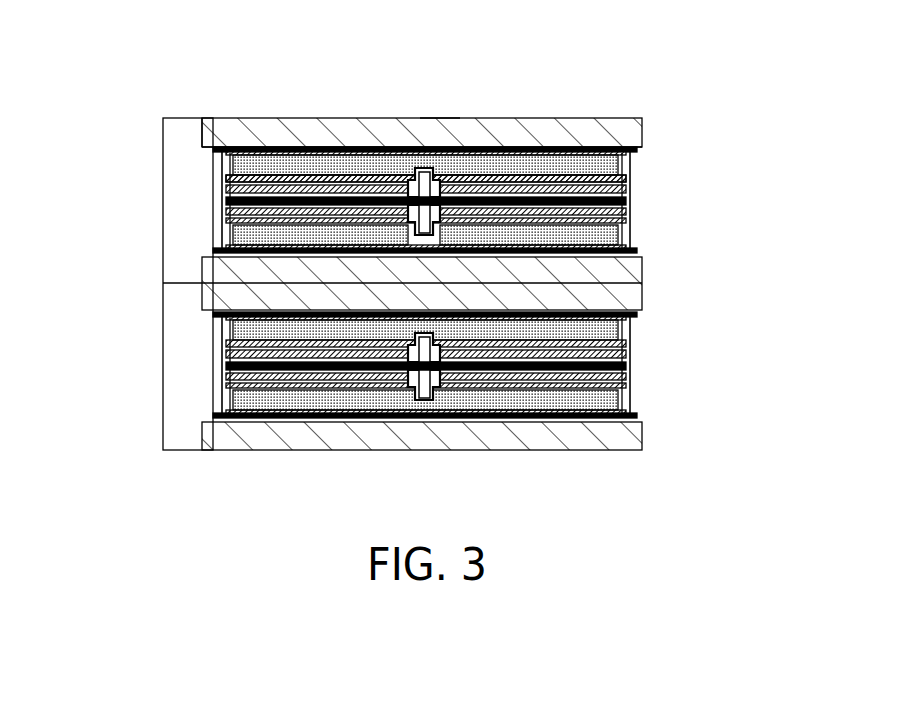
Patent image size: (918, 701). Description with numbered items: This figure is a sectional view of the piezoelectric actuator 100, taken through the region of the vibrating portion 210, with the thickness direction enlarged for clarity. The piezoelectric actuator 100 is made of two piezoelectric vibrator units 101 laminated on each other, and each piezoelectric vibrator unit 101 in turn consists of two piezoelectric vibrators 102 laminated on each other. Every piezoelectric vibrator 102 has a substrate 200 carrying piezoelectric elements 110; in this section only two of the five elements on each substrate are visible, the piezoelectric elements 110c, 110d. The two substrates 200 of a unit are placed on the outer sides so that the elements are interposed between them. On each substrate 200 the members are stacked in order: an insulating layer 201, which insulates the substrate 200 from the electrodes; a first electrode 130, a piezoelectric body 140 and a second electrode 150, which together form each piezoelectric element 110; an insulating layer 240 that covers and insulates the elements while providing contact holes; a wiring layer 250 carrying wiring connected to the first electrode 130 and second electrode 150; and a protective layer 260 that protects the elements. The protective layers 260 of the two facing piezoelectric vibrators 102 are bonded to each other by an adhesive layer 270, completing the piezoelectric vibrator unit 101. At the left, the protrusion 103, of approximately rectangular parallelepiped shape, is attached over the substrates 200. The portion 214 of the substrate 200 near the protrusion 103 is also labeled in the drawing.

The piezoelectric actuator 100 is at (163, 55).
The piezoelectric vibrator unit 101 is at (445, 240).
The piezoelectric vibrator 102 is at (416, 240).
The protrusion 103 is at (164, 117).
The piezoelectric element 110 is at (345, 165).
The piezoelectric element 110c is at (420, 80).
The piezoelectric element 110d is at (632, 82).
The first electrode 130 is at (226, 150).
The piezoelectric body 140 is at (233, 165).
The second electrode 150 is at (226, 181).
The substrate 200 is at (646, 116).
The insulating layer 201 is at (645, 149).
The vibrating portion 210 is at (437, 116).
The separator edge portion 214 is at (203, 132).
The insulating layer 240 is at (248, 178).
The wiring layer 250 is at (290, 187).
The protective layer 260 is at (335, 196).
The adhesive layer 270 is at (592, 192).